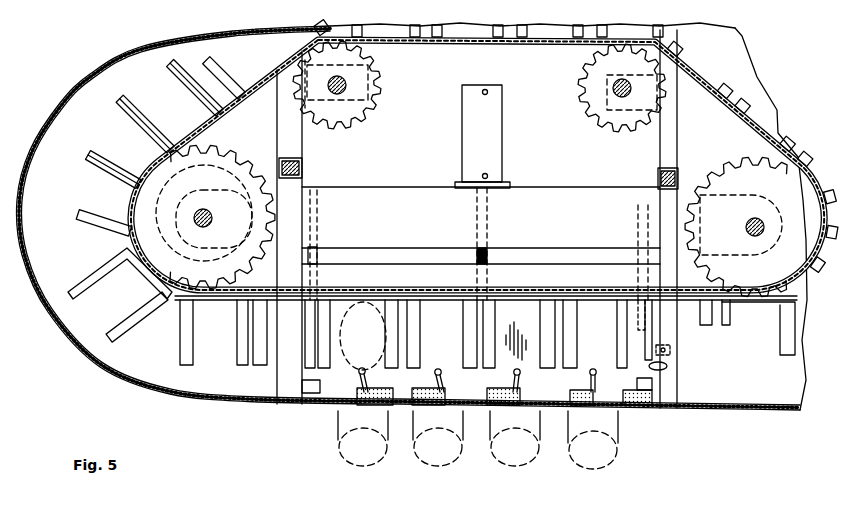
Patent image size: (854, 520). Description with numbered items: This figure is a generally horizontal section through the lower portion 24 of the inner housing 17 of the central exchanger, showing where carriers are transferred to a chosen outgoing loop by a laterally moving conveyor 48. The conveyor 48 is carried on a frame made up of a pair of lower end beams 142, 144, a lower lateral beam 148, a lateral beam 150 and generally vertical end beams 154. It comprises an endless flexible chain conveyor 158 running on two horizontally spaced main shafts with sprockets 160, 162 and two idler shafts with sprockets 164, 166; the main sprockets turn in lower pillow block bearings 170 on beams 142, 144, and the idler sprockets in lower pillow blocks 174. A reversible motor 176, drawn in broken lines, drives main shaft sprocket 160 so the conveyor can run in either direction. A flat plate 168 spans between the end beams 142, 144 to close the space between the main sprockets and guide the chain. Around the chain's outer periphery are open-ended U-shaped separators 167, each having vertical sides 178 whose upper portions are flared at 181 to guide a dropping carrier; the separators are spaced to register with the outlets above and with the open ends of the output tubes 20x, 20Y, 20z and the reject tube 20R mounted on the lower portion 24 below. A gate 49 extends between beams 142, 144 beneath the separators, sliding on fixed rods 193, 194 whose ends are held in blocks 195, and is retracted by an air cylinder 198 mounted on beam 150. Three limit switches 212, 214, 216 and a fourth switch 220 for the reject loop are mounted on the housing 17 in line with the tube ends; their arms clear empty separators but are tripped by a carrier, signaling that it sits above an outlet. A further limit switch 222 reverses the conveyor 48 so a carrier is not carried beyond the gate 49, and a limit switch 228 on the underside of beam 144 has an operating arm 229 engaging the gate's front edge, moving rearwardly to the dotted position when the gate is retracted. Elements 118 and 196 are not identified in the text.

The inner housing 17 is at (709, 411).
The reject output tube 20R is at (350, 470).
The output pneumatic tube 20x is at (424, 468).
The output pneumatic tube 20Y is at (500, 466).
The output pneumatic tube 20z is at (582, 469).
The lower portion 24 is at (236, 411).
The conveyor 48 is at (131, 196).
The gate 49 is at (455, 282).
The lever 118 is at (442, 376).
The lower end beam 142 is at (296, 142).
The lower end beam 144 is at (678, 140).
The lower lateral beam 148 is at (536, 282).
The lateral beam 150 is at (565, 232).
The vertical end beam 154 is at (303, 166).
The endless flexible chain conveyor 158 is at (231, 128).
The main shaft sprocket 160 is at (204, 213).
The main shaft sprocket 162 is at (769, 283).
The idler shaft sprocket 164 is at (382, 78).
The idler shaft sprocket 166 is at (586, 84).
The separator 167 is at (212, 82).
The flat plate 168 is at (367, 288).
The lower pillow block bearing 170 is at (270, 262).
The lower pillow block 174 is at (375, 68).
The reversible motor 176 is at (224, 165).
The vertical side 178 is at (193, 352).
The flared upper portion 181 is at (400, 334).
The fixed rod 193 is at (316, 258).
The fixed rod 194 is at (640, 260).
The block 195 is at (318, 203).
The stop 196 is at (640, 205).
The air cylinder 198 is at (497, 120).
The limit switch 212 is at (575, 392).
The limit switch 214 is at (498, 411).
The limit switch 216 is at (419, 411).
The limit switch 220 is at (378, 404).
The limit switch 222 is at (640, 412).
The limit switch 228 is at (672, 356).
The operating arm 229 is at (668, 367).